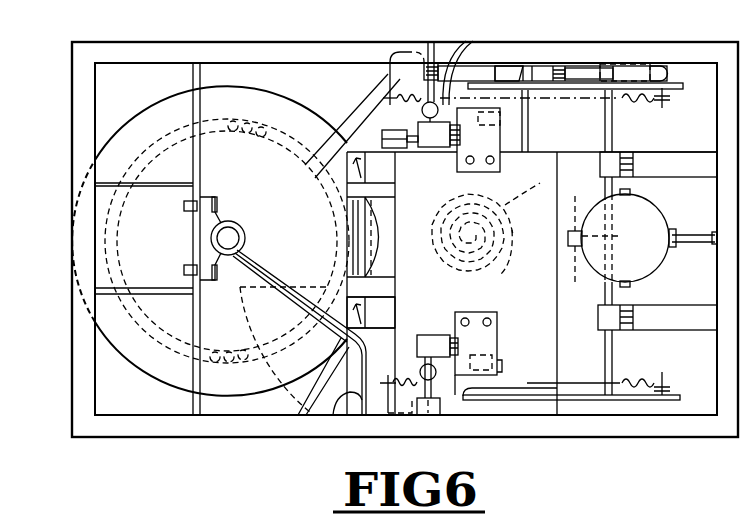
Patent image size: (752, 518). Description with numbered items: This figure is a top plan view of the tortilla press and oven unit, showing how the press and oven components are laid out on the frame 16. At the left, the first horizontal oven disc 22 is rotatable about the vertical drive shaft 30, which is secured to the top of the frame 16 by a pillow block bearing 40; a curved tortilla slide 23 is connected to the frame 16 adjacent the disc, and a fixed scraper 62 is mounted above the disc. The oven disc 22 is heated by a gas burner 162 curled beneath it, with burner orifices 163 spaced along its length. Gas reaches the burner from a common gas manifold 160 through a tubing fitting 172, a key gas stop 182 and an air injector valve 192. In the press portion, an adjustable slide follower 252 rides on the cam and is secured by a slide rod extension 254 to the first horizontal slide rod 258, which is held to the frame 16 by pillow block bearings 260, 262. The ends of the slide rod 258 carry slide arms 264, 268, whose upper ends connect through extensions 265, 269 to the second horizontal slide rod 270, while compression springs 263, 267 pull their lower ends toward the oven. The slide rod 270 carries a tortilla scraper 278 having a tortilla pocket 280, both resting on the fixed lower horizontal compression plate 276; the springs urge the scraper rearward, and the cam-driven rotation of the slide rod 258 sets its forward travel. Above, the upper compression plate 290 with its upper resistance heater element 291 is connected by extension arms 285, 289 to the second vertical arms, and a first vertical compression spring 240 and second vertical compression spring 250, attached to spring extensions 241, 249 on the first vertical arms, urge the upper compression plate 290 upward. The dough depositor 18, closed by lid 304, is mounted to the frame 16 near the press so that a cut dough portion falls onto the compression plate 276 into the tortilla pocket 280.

The frame 16 is at (72, 78).
The dough depositor 18 is at (657, 214).
The horizontal oven disc 22 is at (270, 180).
The curved tortilla slide 23 is at (321, 401).
The vertical drive shaft 30 is at (226, 222).
The pillow block bearing 40 is at (243, 226).
The fixed scraper 62 is at (333, 415).
The gas manifold 160 is at (665, 67).
The gas burner 162 is at (345, 118).
The burner orifices 163 is at (100, 230).
The tubing fitting 172 is at (576, 66).
The key gas stop 182 is at (548, 66).
The air injector valve 192 is at (517, 70).
The first vertical compression spring 240 is at (433, 334).
The spring extension 241 is at (446, 412).
The spring extension 249 is at (440, 58).
The second vertical compression spring 250 is at (410, 60).
The adjustable slide follower 252 is at (580, 273).
The slide rod extension 254 is at (591, 210).
The first horizontal slide rod 258 is at (612, 349).
The pillow block bearing 260 is at (610, 309).
The pillow block bearing 262 is at (617, 160).
The compression spring 263 is at (408, 378).
The slide arm 264 is at (572, 401).
The extension 265 is at (457, 377).
The compression spring 267 is at (648, 104).
The slide arm 268 is at (648, 70).
The extension 269 is at (458, 90).
The second horizontal slide rod 270 is at (545, 372).
The lower horizontal compression plate 276 is at (389, 113).
The tortilla scraper 278 is at (396, 195).
The tortilla pocket 280 is at (391, 291).
The extension arm 285 is at (498, 340).
The extension arm 289 is at (500, 148).
The upper compression plate 290 is at (556, 232).
The upper resistance heater element 291 is at (503, 273).
The lid 304 is at (663, 252).